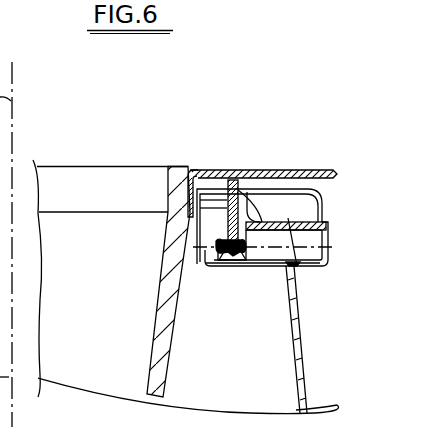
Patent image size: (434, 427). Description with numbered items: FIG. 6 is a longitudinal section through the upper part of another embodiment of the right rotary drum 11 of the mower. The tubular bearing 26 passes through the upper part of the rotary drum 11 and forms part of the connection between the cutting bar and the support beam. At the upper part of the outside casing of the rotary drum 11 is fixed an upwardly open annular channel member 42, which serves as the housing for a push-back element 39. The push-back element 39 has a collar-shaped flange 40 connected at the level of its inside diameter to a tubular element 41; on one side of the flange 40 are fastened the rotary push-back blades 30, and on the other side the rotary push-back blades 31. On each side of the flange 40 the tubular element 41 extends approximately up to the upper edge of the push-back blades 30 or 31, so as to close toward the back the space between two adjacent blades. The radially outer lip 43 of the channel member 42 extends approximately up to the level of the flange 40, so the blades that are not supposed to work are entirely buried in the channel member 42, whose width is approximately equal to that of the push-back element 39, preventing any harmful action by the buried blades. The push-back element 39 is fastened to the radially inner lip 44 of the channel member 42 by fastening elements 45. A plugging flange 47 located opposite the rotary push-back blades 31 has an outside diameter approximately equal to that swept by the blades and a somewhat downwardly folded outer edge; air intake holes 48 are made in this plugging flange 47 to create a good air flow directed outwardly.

The rotary drum 11 is at (304, 383).
The tubular bearing 26 is at (160, 362).
The rotary push-back blades 30 is at (305, 244).
The rotary push-back blades 31 is at (305, 207).
The push-back element 39 is at (330, 207).
The collar-shaped flange 40 is at (295, 266).
The tubular element 41 is at (225, 213).
The annular channel member 42 is at (262, 263).
The radially outer lip 43 is at (327, 256).
The radially inner lip 44 is at (217, 248).
The fastening elements 45 is at (262, 225).
The plugging flange 47 is at (213, 170).
The air intake holes 48 is at (284, 172).